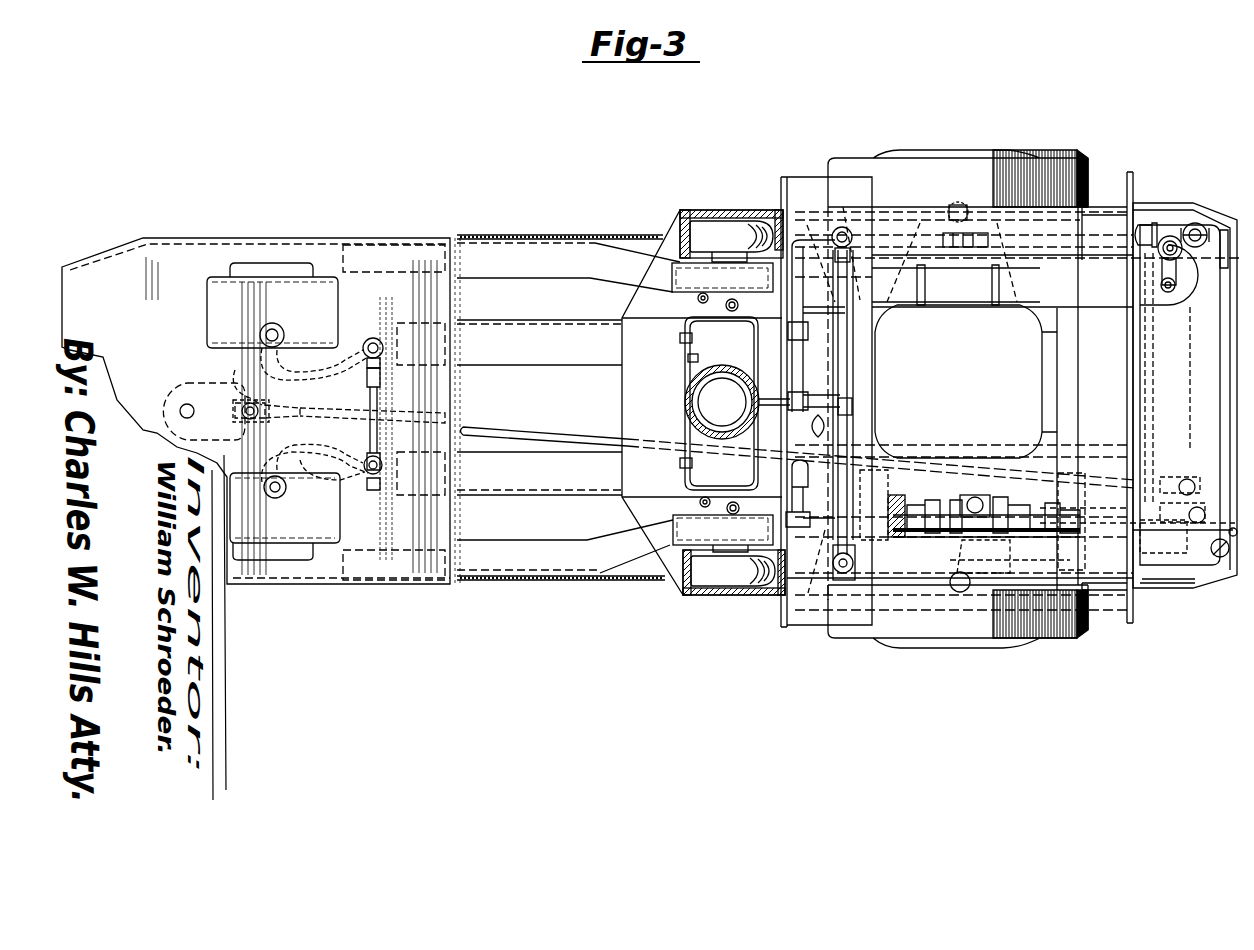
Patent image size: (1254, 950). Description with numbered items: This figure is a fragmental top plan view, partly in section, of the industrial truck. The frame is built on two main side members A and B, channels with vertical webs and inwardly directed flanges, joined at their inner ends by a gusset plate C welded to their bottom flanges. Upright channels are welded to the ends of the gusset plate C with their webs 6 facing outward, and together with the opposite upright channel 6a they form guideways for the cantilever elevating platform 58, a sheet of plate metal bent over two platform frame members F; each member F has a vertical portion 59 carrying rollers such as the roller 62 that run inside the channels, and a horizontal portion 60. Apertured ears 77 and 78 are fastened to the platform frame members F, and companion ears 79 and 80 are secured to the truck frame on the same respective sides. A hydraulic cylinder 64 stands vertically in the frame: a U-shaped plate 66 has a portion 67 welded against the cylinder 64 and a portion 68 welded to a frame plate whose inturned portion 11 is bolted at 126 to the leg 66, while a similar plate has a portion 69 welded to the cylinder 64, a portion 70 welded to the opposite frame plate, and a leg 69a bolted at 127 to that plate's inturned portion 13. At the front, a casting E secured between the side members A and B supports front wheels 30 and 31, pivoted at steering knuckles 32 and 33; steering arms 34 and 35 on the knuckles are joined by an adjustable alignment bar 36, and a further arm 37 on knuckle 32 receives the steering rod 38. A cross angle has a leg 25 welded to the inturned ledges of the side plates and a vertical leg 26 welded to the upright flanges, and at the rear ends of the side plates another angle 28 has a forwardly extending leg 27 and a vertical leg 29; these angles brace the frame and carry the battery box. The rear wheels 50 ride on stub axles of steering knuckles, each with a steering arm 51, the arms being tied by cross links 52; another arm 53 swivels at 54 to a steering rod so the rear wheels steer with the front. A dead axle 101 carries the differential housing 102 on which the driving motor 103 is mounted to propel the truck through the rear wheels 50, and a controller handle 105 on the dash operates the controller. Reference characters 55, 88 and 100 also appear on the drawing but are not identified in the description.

The elevating platform 58 is at (128, 262).
The steering knuckle 32 is at (262, 328).
The front wheel 30 is at (280, 325).
The steering arm 34 is at (330, 362).
The casting E is at (308, 357).
The arm 37 is at (230, 366).
The bar 36 is at (420, 410).
The steering rod 38 is at (515, 432).
The steering arm 35 is at (348, 480).
The steering knuckle 33 is at (278, 497).
The front wheel 31 is at (303, 507).
The platform frame member F is at (548, 245).
The horizontal portion 60 is at (535, 555).
The vertical portion 59 is at (640, 516).
The main side member A is at (552, 346).
The main side member B is at (582, 460).
The gusset plate C is at (702, 407).
The upright channel 6a is at (708, 210).
The apertured ear 78 is at (697, 298).
The ear 80 is at (738, 306).
The upright channel 6 is at (722, 590).
The roller 62 is at (707, 572).
The ear 79 is at (699, 503).
The apertured ear 77 is at (740, 509).
The inturned portion 69 is at (738, 368).
The hydraulic cylinder 64 is at (700, 410).
The plate portion 70 is at (704, 320).
The bolt 127 is at (680, 339).
The leg 69a is at (690, 356).
The inturned portion 13 is at (688, 380).
The inturned portion 11 is at (695, 420).
The U-shaped plate 66 is at (695, 450).
The bolt 126 is at (683, 467).
The plate portion 68 is at (706, 490).
The plate portion 67 is at (757, 450).
The vertical leg 26 is at (782, 190).
The leg 25 is at (807, 178).
The vertical leg 29 is at (792, 178).
The rear wheel 50 is at (990, 160).
The leg 27 is at (1125, 176).
The angle 28 is at (1114, 612).
The differential housing 102 is at (976, 398).
The cross link 52 is at (850, 291).
The steering arm 51 is at (870, 558).
The swivel 54 is at (977, 499).
The coupling 55 is at (1050, 506).
The arm 53 is at (1004, 545).
The member 88 is at (1077, 545).
The dead axle 101 is at (1014, 476).
The driving motor 103 is at (1180, 338).
The bracket 100 is at (1180, 286).
The controller handle 105 is at (1201, 247).